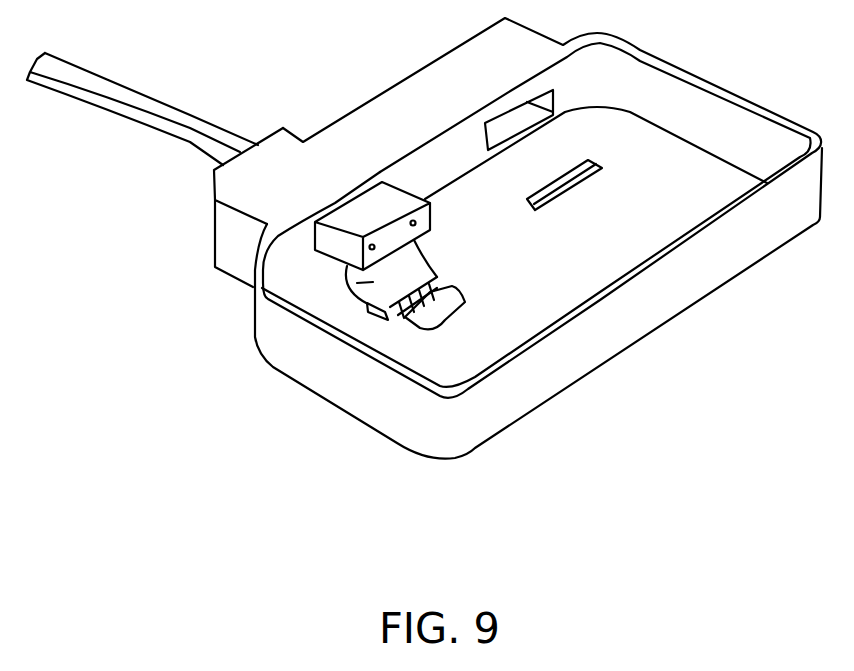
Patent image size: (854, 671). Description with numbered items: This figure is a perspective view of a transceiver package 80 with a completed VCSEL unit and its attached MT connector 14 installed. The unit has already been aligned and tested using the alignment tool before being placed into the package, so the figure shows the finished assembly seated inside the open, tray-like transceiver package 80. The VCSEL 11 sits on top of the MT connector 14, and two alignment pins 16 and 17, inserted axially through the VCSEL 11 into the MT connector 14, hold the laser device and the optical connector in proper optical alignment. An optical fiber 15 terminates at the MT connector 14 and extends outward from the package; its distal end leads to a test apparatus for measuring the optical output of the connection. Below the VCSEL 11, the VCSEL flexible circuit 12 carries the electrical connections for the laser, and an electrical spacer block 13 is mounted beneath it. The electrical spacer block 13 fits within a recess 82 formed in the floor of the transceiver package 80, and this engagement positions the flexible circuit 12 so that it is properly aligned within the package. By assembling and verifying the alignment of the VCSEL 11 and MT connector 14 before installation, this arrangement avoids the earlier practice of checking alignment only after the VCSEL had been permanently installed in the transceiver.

The transceiver package 80 is at (788, 122).
The recess 82 is at (600, 167).
The optical fiber 15 is at (150, 97).
The MT connector 14 is at (283, 130).
The VCSEL 11 is at (355, 252).
The alignment pin 16 is at (375, 247).
The alignment pin 17 is at (416, 223).
The VCSEL flexible circuit 12 is at (353, 290).
The electrical spacer block 13 is at (382, 315).